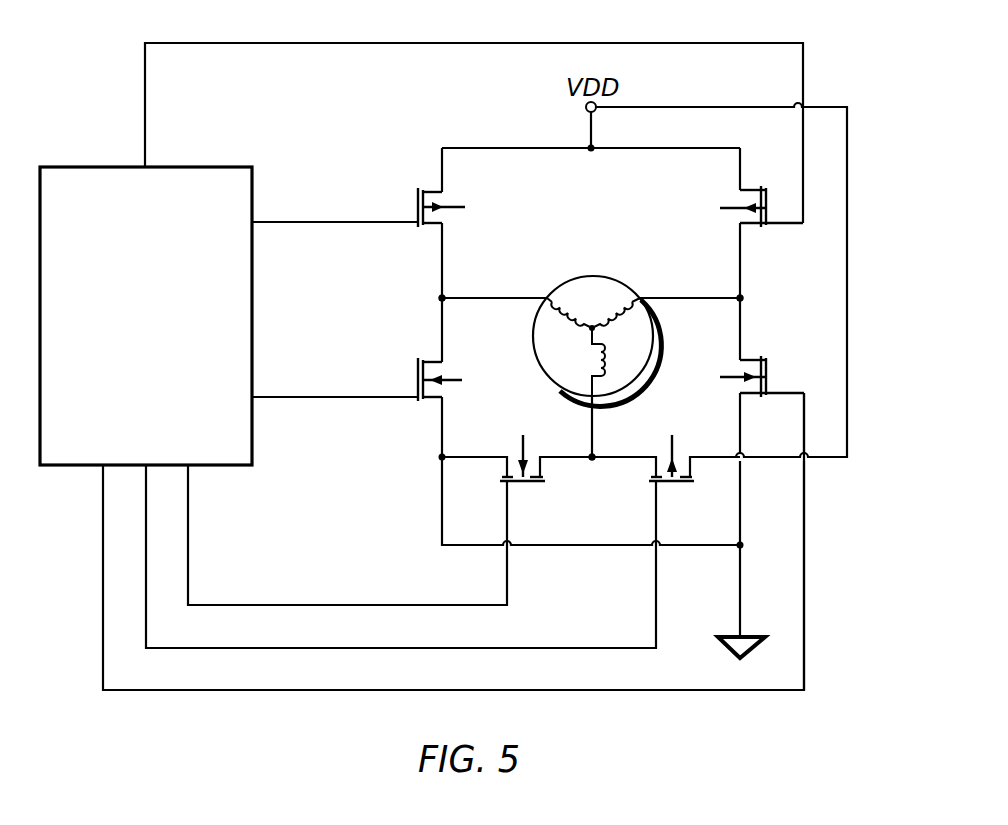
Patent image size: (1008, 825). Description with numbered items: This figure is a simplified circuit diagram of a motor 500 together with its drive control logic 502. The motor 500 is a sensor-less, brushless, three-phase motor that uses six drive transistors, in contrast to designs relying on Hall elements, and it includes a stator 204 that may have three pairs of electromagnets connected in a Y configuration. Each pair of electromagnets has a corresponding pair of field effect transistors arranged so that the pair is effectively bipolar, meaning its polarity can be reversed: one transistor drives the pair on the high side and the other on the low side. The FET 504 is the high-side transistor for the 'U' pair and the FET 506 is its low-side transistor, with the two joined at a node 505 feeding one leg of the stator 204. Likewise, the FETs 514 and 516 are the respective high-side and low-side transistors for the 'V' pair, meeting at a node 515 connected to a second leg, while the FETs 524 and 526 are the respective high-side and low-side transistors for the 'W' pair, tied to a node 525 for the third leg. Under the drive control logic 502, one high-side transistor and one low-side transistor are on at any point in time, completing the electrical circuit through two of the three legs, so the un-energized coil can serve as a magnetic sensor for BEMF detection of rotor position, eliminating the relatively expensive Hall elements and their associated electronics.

The stator 204 is at (592, 277).
The motor 500 is at (626, 284).
The drive control logic 502 is at (146, 316).
The FET 504 is at (460, 208).
The first motor terminal node 505 is at (440, 298).
The FET 506 is at (462, 379).
The FET 514 is at (720, 207).
The second motor terminal node 515 is at (742, 298).
The FET 516 is at (720, 376).
The FET 524 is at (682, 483).
The center-tap node 525 is at (593, 461).
The FET 526 is at (527, 483).